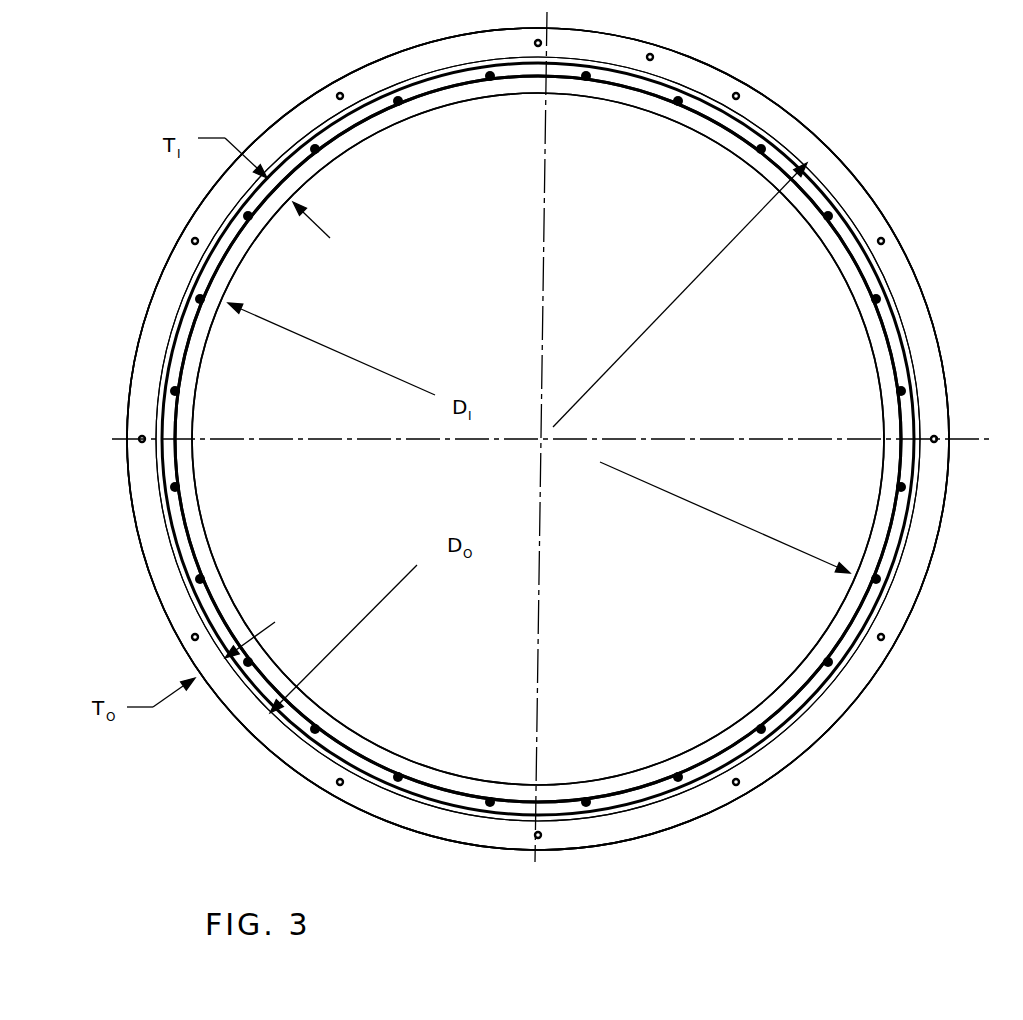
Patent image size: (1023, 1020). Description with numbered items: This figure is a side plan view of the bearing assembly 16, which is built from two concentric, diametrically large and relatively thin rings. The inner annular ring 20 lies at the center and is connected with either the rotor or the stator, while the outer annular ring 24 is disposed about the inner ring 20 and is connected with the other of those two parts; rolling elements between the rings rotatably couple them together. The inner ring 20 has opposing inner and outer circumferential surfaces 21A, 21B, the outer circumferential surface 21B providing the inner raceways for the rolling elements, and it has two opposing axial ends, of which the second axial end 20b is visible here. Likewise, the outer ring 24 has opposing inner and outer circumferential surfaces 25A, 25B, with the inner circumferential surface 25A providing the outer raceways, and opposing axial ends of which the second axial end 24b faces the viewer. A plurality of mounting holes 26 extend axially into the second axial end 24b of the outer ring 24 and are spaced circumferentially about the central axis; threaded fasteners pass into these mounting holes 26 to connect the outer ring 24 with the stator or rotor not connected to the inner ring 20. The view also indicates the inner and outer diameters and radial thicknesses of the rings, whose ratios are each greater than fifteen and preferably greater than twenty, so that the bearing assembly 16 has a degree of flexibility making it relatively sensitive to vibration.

The bearing assembly 16 is at (86, 210).
The inner annular ring 20 is at (701, 718).
The second axial end 20b is at (877, 330).
The inner circumferential surface 21A is at (203, 367).
The outer circumferential surface 21B is at (170, 345).
The outer annular ring 24 is at (708, 838).
The second axial end 24b is at (848, 180).
The inner circumferential surface 25A is at (164, 532).
The outer circumferential surface 25B is at (142, 553).
The mounting holes 26 is at (342, 93).